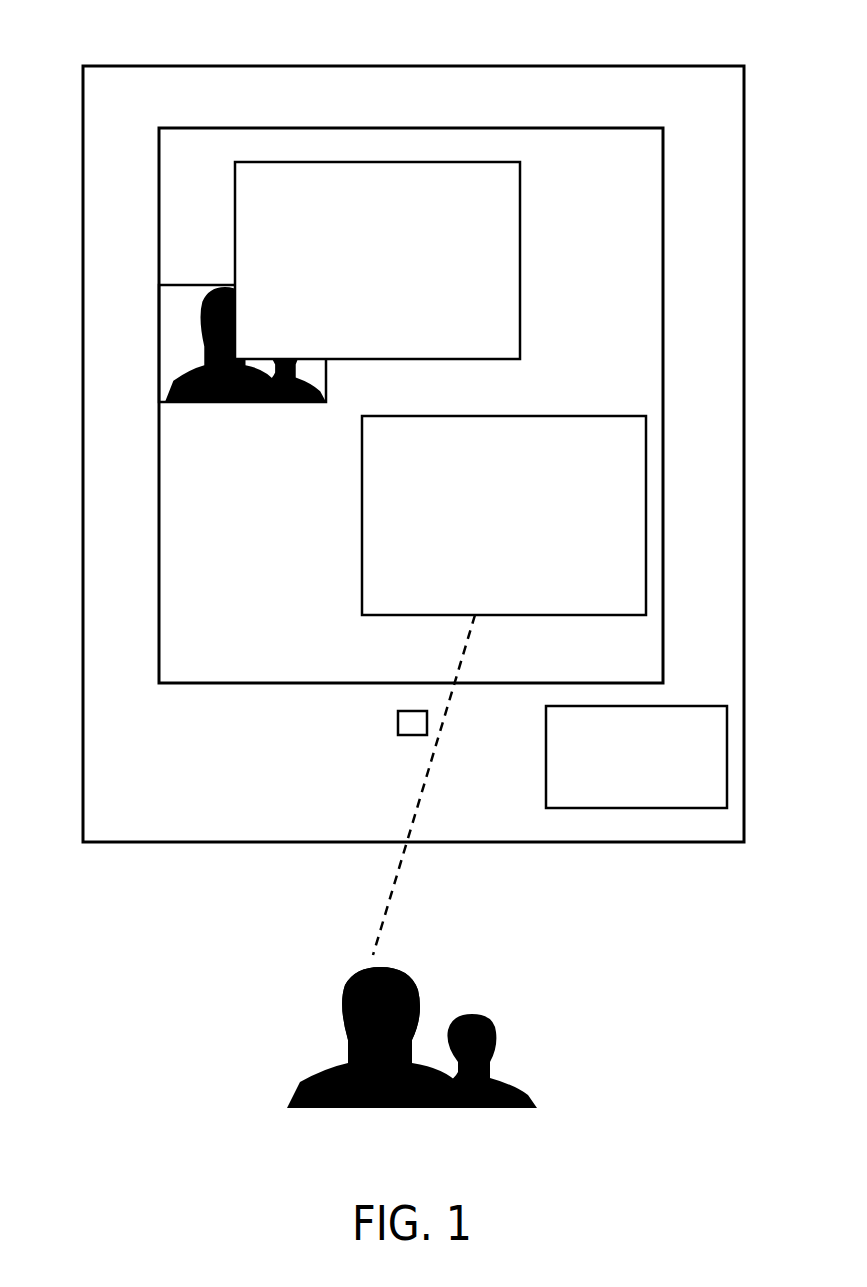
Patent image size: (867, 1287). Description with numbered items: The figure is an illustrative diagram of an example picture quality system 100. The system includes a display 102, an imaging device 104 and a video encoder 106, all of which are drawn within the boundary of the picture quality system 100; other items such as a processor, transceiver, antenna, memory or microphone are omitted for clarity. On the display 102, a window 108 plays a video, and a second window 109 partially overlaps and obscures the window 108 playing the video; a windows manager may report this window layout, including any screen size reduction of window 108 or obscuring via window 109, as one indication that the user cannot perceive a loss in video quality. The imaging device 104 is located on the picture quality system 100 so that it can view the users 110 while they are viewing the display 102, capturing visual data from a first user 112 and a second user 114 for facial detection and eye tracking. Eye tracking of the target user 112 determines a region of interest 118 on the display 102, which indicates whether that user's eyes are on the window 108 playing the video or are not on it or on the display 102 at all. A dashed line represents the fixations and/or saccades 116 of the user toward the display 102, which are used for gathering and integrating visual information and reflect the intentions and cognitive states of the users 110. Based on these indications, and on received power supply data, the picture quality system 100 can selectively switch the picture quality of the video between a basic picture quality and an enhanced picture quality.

The picture quality system 100 is at (170, 61).
The display 102 is at (278, 685).
The imaging device 104 is at (398, 717).
The video encoder 106 is at (654, 796).
The window playing the video 108 is at (188, 348).
The window 109 is at (397, 287).
The users 110 is at (337, 991).
The first user 112 is at (342, 1010).
The second user 114 is at (497, 1058).
The fixations and/or saccades 116 is at (400, 875).
The region of interest 118 is at (522, 543).